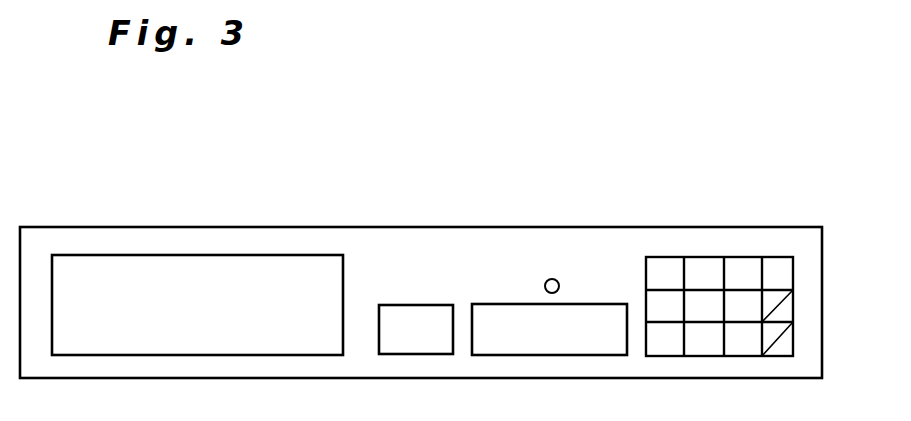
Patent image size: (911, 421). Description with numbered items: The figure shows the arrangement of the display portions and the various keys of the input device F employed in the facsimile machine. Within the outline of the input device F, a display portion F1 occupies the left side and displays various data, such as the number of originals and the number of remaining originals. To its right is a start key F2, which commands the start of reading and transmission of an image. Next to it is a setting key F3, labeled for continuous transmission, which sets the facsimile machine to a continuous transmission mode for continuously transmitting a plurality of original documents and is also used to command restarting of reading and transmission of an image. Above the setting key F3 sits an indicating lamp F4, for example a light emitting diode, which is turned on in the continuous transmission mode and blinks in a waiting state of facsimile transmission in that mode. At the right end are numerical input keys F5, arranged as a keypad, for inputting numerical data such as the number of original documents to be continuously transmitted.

The input device F is at (132, 240).
The display portion F1 is at (276, 254).
The start key F2 is at (413, 304).
The setting key F3 is at (583, 303).
The indicating lamp F4 is at (552, 279).
The numerical input keys F5 is at (738, 256).